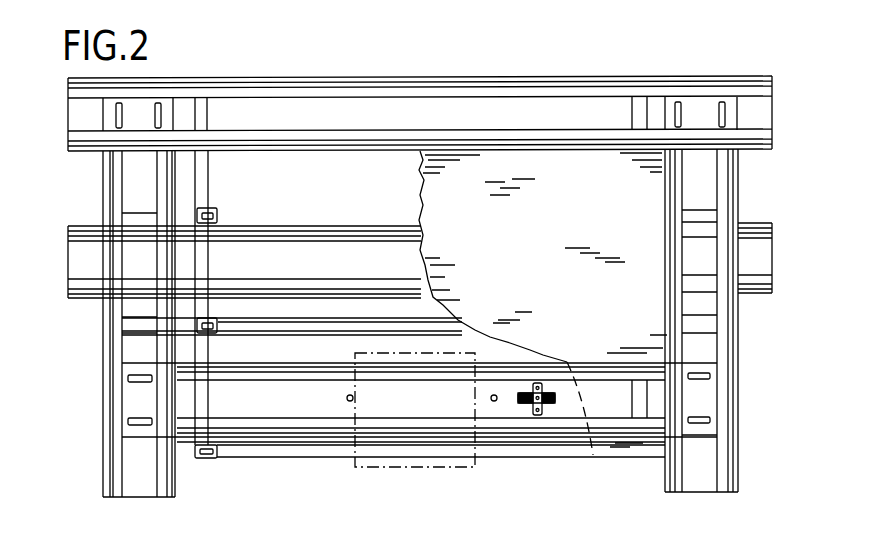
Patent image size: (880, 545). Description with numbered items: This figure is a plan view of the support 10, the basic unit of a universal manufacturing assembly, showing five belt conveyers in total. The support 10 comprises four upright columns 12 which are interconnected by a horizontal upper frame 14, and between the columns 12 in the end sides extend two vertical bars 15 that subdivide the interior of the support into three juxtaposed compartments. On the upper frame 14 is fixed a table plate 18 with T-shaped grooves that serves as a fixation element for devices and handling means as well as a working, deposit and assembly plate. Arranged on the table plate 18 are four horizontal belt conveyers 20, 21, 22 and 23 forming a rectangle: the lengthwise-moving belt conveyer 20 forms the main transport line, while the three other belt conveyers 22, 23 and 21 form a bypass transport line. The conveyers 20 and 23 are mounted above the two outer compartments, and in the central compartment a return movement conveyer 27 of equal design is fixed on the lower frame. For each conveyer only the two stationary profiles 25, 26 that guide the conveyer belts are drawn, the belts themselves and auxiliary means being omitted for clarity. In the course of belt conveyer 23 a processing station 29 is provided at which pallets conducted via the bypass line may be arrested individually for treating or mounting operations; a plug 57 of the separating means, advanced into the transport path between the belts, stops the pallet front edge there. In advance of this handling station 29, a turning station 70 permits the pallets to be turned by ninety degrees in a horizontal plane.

The support 10 is at (255, 196).
The upright column 12 is at (207, 459).
The upper frame 14 is at (205, 162).
The vertical bar 15 is at (212, 207).
The table plate 18 is at (647, 185).
The belt conveyer 20 is at (475, 73).
The belt conveyer 21 is at (99, 345).
The belt conveyer 22 is at (745, 323).
The belt conveyer 23 is at (292, 443).
The stationary profile 25 is at (548, 90).
The stationary profile 26 is at (558, 135).
The return movement conveyer 27 is at (305, 283).
The processing station 29 is at (460, 480).
The plug 57 is at (350, 402).
The turning station 70 is at (542, 382).